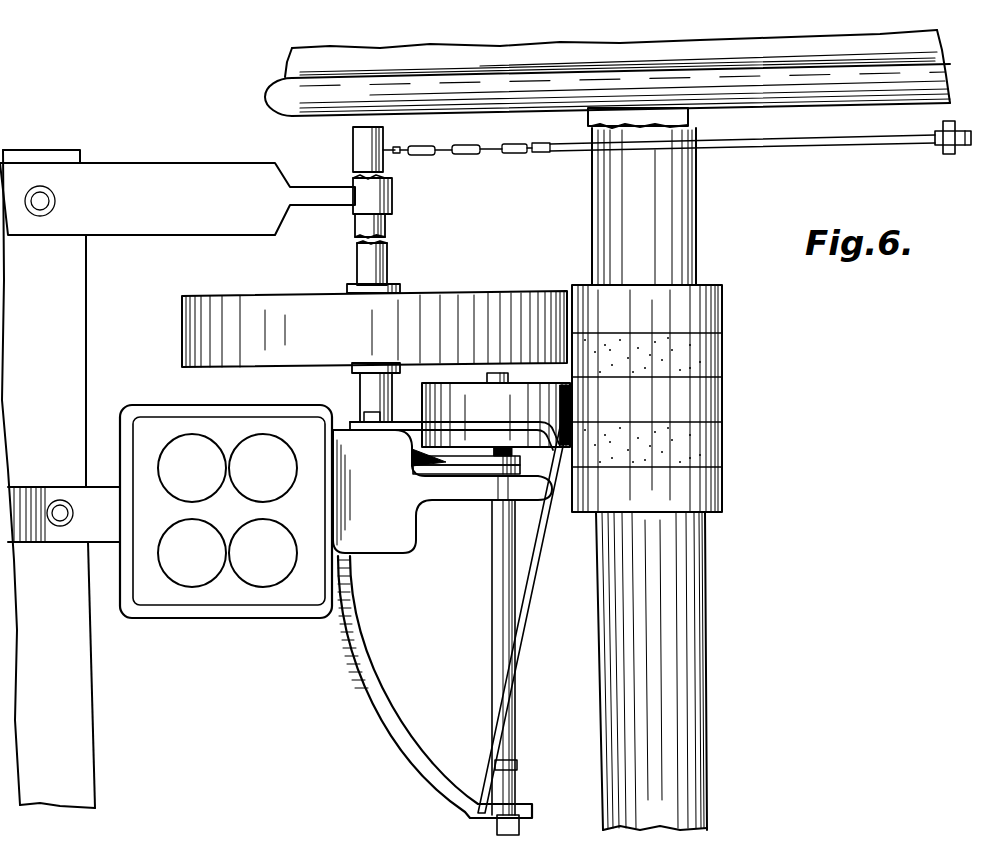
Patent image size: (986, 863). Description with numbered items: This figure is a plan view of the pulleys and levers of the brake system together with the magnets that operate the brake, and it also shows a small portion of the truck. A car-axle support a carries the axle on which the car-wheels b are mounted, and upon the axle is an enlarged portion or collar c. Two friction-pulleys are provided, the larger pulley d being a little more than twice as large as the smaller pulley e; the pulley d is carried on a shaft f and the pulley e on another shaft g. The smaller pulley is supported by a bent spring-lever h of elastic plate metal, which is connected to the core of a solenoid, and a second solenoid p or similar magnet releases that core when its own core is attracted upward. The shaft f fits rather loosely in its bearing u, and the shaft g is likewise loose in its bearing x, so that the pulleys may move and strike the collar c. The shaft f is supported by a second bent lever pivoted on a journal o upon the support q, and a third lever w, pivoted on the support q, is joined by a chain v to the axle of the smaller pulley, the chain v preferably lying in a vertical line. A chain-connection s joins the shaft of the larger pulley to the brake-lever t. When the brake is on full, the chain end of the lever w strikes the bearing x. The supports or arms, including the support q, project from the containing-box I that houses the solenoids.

The car-axle support a is at (647, 469).
The car-wheels b is at (607, 73).
The collar c is at (647, 398).
The friction-pulley d is at (374, 329).
The friction-pulley e is at (496, 410).
The shaft f is at (383, 258).
The shaft g is at (492, 556).
The bent lever h is at (466, 460).
The containing-box I is at (226, 511).
The journal o is at (364, 416).
The solenoid p is at (455, 425).
The support q is at (442, 491).
The chain-connection s is at (466, 157).
The brake-lever t is at (938, 150).
The bearing u is at (392, 192).
The chain v is at (517, 765).
The lever w is at (524, 599).
The bearing x is at (533, 808).